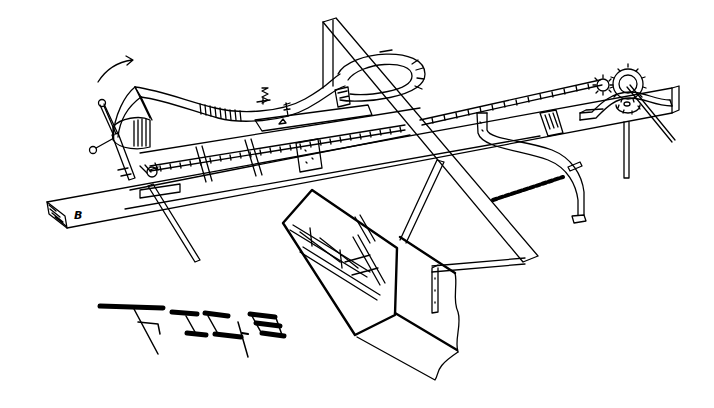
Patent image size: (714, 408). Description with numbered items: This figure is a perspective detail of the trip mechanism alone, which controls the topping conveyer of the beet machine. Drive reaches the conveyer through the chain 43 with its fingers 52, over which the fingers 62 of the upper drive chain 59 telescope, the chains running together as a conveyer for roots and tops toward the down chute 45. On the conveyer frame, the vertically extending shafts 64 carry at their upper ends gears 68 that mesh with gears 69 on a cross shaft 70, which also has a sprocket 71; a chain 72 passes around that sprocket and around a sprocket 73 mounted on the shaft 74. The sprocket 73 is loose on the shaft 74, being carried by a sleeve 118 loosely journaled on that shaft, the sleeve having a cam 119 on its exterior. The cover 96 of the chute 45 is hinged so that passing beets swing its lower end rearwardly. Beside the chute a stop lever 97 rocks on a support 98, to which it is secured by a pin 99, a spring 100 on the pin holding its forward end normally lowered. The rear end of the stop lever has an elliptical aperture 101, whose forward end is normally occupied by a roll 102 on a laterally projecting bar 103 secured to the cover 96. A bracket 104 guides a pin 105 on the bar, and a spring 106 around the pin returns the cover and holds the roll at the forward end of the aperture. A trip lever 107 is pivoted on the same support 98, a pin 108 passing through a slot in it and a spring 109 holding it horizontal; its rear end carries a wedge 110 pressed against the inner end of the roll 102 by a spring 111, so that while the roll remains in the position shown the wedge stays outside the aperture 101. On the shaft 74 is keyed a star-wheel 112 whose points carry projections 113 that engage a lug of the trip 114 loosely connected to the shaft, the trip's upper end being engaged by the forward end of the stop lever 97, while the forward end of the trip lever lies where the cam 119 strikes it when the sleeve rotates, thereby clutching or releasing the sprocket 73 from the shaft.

The chain 43 is at (355, 292).
The down chute 45 is at (395, 356).
The fingers 52 is at (293, 228).
The upper drive chain 59 is at (370, 238).
The fingers 62 is at (372, 258).
The vertically extending shafts 64 is at (624, 145).
The gears 68 is at (634, 114).
The gears 69 is at (632, 78).
The cross shaft 70 is at (670, 144).
The sprocket 71 is at (604, 76).
The chain 72 is at (248, 155).
The sprocket 73 is at (145, 176).
The shaft 74 is at (195, 262).
The cover 96 is at (450, 312).
The stop lever 97 is at (216, 104).
The support 98 is at (272, 118).
The pin 99 is at (265, 86).
The spring 100 is at (262, 96).
The elliptical aperture 101 is at (412, 64).
The roll 102 is at (345, 83).
The laterally projecting bar 103 is at (408, 110).
The bracket 104 is at (586, 206).
The pin 105 is at (581, 165).
The spring 106 is at (534, 196).
The trip lever 107 is at (198, 143).
The pin 108 is at (289, 112).
The spring 109 is at (279, 124).
The wedge 110 is at (350, 95).
The spring 111 is at (318, 148).
The star-wheel 112 is at (90, 151).
The projections 113 is at (92, 147).
The trip 114 is at (127, 103).
The sleeve 118 is at (143, 125).
The cam 119 is at (128, 160).